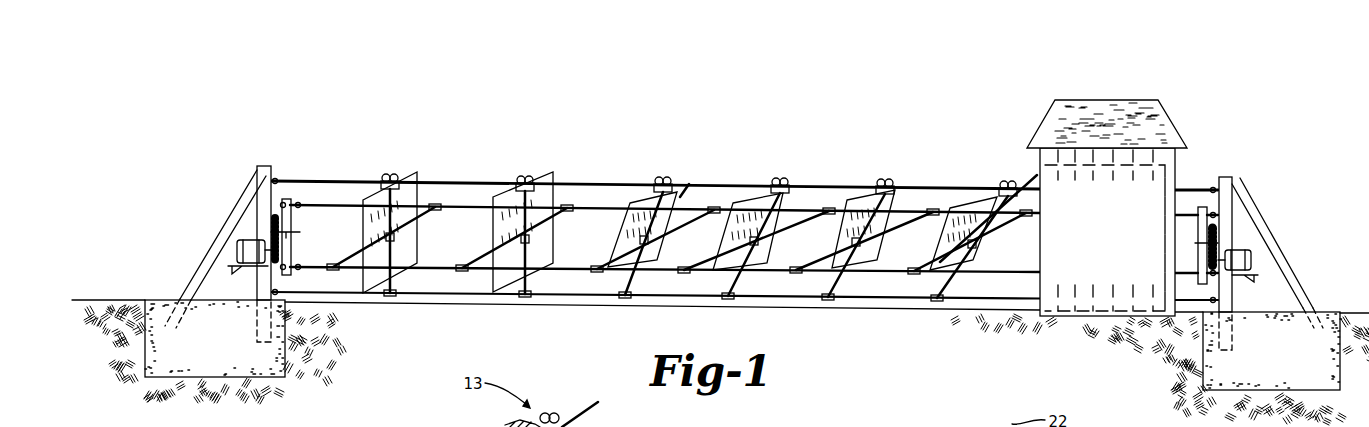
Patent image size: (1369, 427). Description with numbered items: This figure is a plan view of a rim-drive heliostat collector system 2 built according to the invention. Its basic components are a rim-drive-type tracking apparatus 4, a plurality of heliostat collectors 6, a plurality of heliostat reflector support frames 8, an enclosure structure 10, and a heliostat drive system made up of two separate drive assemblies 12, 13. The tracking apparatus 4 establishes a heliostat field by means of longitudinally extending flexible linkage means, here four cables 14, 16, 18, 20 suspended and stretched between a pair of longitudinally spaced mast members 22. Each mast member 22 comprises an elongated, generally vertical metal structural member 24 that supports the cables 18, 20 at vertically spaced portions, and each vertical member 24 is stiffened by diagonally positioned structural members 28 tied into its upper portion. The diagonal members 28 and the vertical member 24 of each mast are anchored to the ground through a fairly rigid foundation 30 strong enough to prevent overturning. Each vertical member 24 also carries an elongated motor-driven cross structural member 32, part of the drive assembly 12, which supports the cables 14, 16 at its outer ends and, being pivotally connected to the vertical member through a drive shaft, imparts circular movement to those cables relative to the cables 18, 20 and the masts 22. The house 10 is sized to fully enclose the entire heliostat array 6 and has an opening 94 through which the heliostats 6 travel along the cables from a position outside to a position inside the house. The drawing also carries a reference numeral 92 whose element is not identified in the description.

The heliostat collector system 2 is at (606, 177).
The rim-drive-type tracking apparatus 4 is at (692, 182).
The heliostat collectors 6 is at (776, 213).
The heliostat reflector support frames 8 is at (571, 211).
The enclosure structure 10 is at (1120, 100).
The drive assembly 12 is at (237, 250).
The drive assembly 13 is at (390, 174).
The cable 14 is at (468, 212).
The cable 16 is at (437, 263).
The cable 18 is at (457, 203).
The cable 20 is at (437, 295).
The mast members 22 is at (257, 167).
The vertical structural member 24 is at (254, 289).
The diagonal structural members 28 is at (228, 218).
The foundation 30 is at (196, 350).
The cross structural member 32 is at (287, 198).
The opening 94 is at (1035, 177).
The screen element (adjacent figure) 92 is at (500, 421).